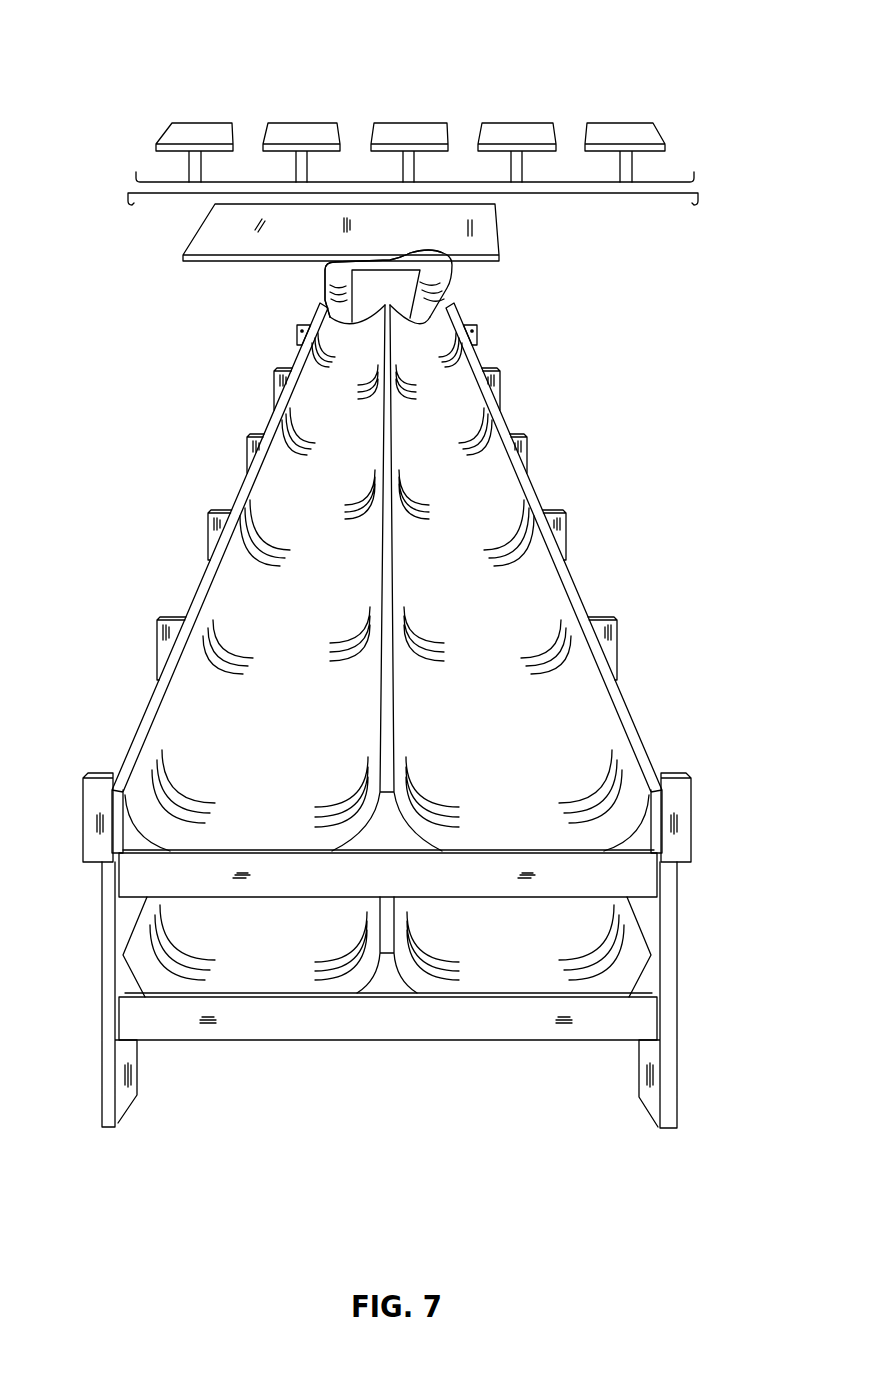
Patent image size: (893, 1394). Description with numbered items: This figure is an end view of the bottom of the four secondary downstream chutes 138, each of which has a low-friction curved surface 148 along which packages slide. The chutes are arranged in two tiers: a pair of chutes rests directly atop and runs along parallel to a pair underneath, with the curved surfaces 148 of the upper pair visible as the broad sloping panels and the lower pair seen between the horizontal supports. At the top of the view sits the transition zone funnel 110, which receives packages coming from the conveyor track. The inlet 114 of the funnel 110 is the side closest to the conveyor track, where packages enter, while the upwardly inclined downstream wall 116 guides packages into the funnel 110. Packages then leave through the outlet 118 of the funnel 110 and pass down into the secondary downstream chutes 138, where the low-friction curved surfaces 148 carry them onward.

The transition zone funnel 110 is at (377, 288).
The inlet 114 is at (395, 257).
The upwardly inclined downstream wall 116 is at (441, 270).
The outlet 118 is at (330, 297).
The secondary downstream chutes 138 is at (388, 540).
The low-friction curved surface 148 is at (492, 610).